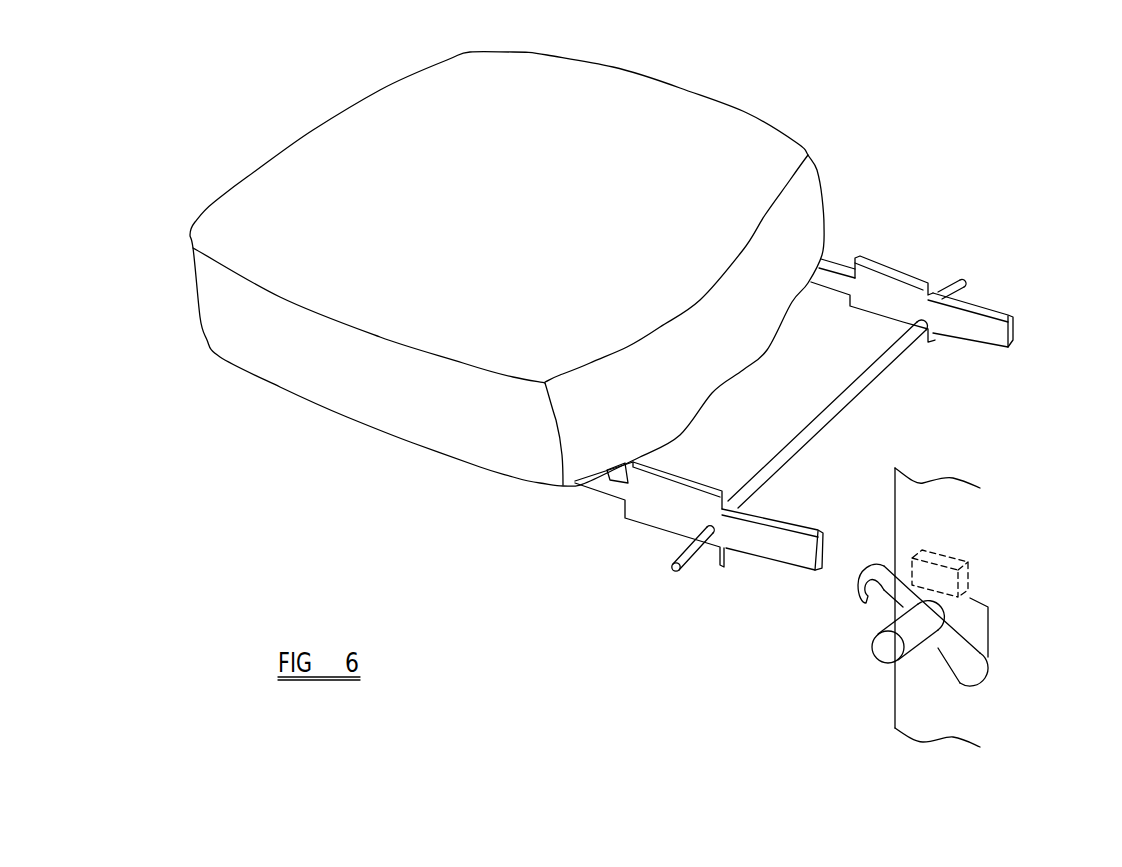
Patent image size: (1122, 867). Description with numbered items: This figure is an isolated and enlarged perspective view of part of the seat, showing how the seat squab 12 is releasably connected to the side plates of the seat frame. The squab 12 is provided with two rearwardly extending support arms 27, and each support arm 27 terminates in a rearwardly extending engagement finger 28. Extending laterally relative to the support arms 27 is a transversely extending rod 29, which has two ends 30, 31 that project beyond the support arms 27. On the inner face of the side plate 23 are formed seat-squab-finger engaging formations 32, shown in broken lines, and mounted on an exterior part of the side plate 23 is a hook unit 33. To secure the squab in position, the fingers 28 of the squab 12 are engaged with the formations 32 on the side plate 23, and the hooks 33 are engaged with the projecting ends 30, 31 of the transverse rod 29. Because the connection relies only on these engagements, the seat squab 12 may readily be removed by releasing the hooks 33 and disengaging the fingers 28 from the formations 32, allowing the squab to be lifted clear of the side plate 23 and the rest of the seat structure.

The seat squab 12 is at (640, 125).
The side plate 23 is at (920, 697).
The support arm 27 is at (883, 297).
The engagement finger 28 is at (983, 328).
The transversely extending rod 29 is at (883, 365).
The end of transverse rod 30 is at (693, 550).
The end of transverse rod 31 is at (957, 280).
The seat-squab-finger engaging formation 32 is at (970, 563).
The hook unit 33 is at (957, 661).